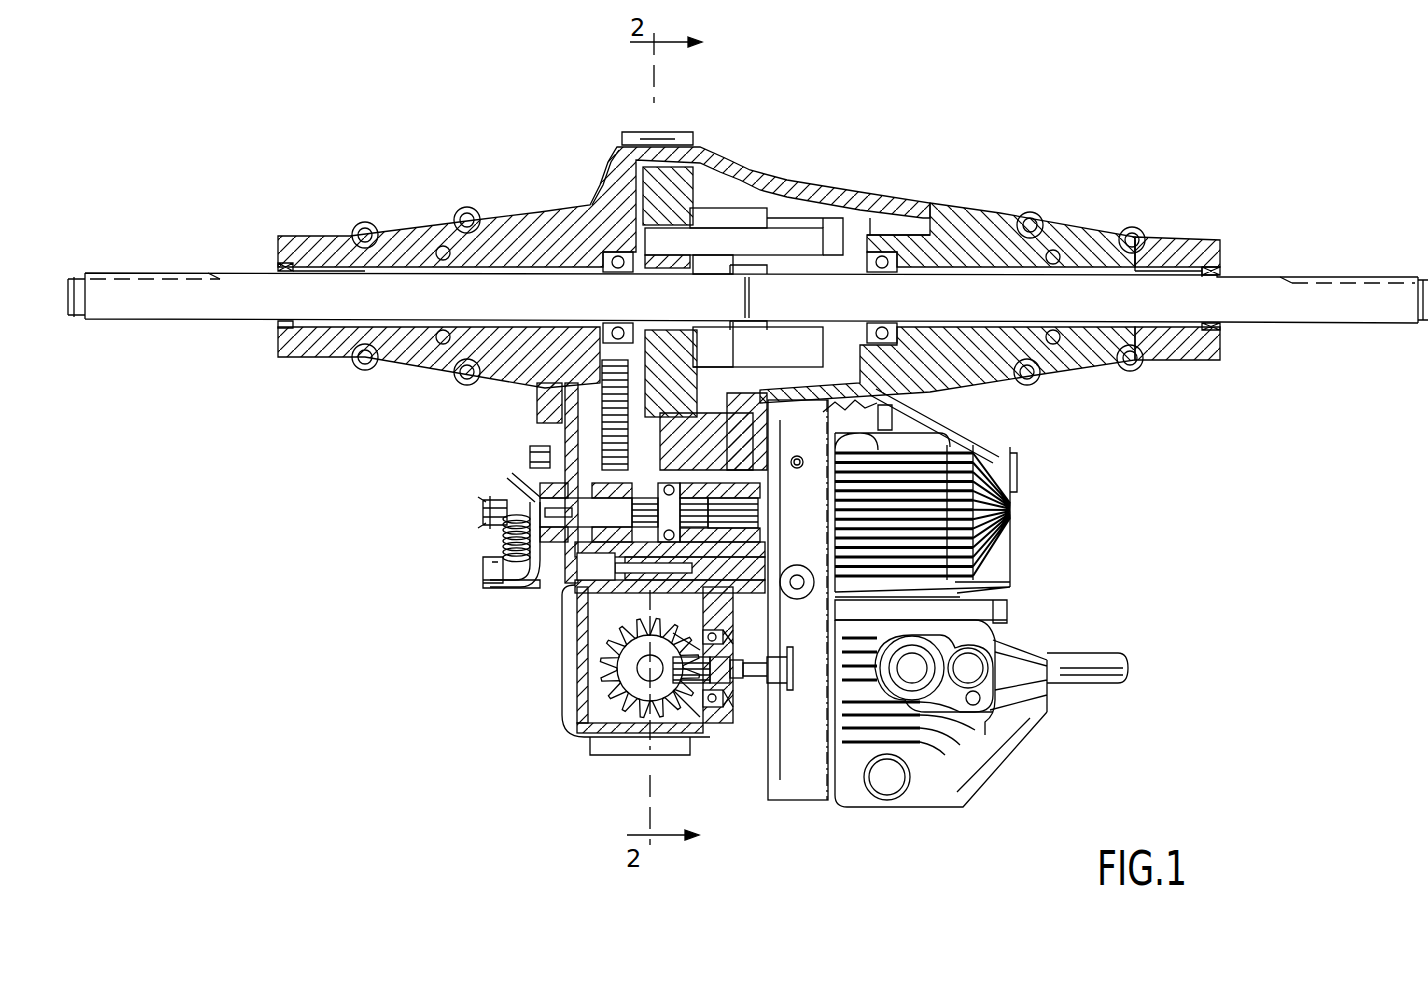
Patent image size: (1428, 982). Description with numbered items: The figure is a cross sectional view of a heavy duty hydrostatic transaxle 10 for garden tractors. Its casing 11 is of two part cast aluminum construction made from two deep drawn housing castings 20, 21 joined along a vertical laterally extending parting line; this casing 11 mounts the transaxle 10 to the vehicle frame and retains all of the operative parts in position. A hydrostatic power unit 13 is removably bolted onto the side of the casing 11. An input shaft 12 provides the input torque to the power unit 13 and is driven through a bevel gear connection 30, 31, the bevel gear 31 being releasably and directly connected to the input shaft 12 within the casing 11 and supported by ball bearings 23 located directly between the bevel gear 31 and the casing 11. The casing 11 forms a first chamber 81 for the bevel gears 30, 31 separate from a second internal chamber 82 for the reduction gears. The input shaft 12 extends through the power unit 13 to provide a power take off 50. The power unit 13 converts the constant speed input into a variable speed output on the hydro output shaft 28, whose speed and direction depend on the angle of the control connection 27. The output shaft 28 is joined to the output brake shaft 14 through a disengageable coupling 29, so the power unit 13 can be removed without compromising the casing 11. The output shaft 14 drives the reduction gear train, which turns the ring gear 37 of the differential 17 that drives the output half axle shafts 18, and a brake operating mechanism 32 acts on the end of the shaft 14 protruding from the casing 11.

The transaxle 10 is at (993, 164).
The casing 11 is at (1208, 243).
The input shaft 12 is at (728, 680).
The hydrostatic power unit 13 is at (1015, 570).
The output brake shaft 14 is at (595, 517).
The differential 17 is at (703, 308).
The output half axle shafts 18 is at (1024, 307).
The housing casting 20 is at (790, 176).
The housing casting 21 is at (607, 183).
The ball bearings 23 is at (712, 705).
The control connection 27 is at (914, 670).
The hydro output shaft 28 is at (750, 508).
The disengageable coupling 29 is at (743, 487).
The bevel gear 30 is at (612, 632).
The bevel gear 31 is at (702, 632).
The brake operating mechanism 32 is at (507, 478).
The ring gear 37 is at (647, 217).
The power take off 50 is at (1112, 660).
The first chamber 81 is at (598, 712).
The second internal chamber 82 is at (862, 215).